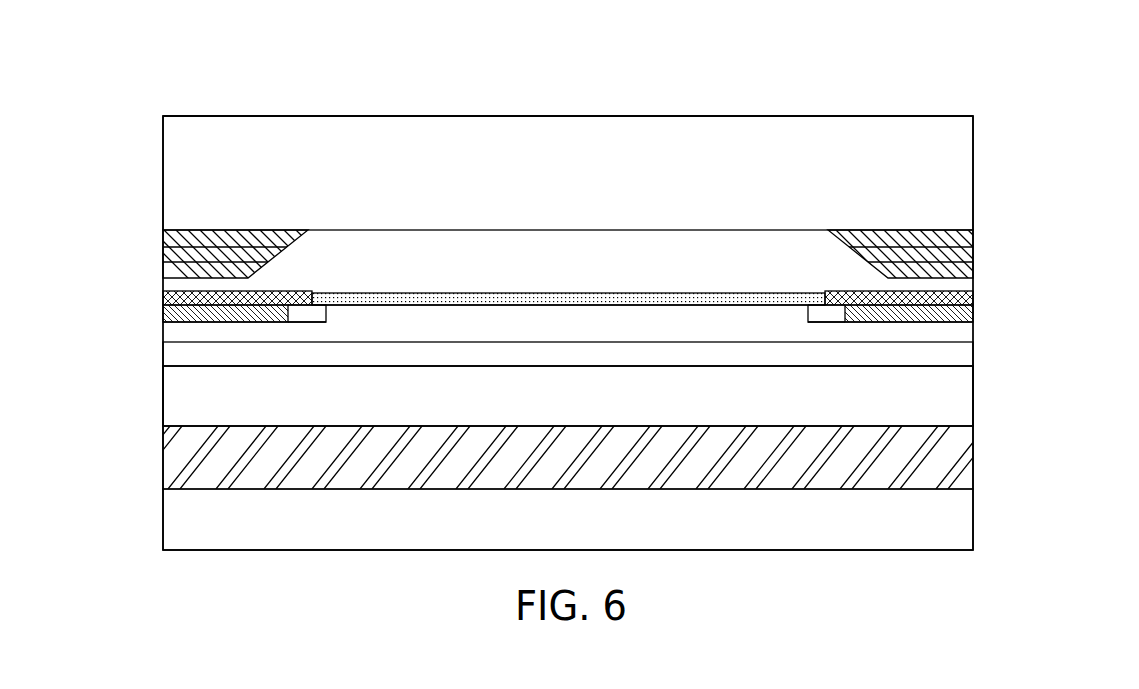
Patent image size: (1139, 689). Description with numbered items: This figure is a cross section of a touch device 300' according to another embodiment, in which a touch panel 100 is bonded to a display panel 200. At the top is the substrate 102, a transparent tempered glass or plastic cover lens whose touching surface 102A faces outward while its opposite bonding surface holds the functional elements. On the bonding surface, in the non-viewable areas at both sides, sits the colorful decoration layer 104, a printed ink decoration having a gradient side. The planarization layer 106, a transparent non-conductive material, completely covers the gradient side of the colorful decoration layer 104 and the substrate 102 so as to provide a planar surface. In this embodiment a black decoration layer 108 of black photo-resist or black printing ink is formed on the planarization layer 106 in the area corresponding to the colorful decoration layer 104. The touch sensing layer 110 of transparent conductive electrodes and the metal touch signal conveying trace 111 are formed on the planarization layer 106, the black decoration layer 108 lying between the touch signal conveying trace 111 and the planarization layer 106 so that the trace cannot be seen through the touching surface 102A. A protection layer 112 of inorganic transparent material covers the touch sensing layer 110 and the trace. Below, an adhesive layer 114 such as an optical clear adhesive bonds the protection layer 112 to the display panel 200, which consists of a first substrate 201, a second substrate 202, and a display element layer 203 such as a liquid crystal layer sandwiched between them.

The touch device 300' is at (619, 289).
The touch panel 100 is at (1059, 437).
The substrate 102 is at (952, 167).
The touching surface 102A is at (529, 112).
The colorful decoration layer 104 is at (973, 251).
The planarization layer 106 is at (973, 322).
The black decoration layer 108 is at (933, 285).
The touch sensing layer 110 is at (833, 317).
The touch signal conveying trace 111 is at (900, 310).
The protection layer 112 is at (763, 323).
The adhesive layer 114 is at (183, 356).
The display panel 200 is at (85, 371).
The first substrate 201 is at (183, 395).
The second substrate 202 is at (183, 517).
The display element layer 203 is at (183, 456).